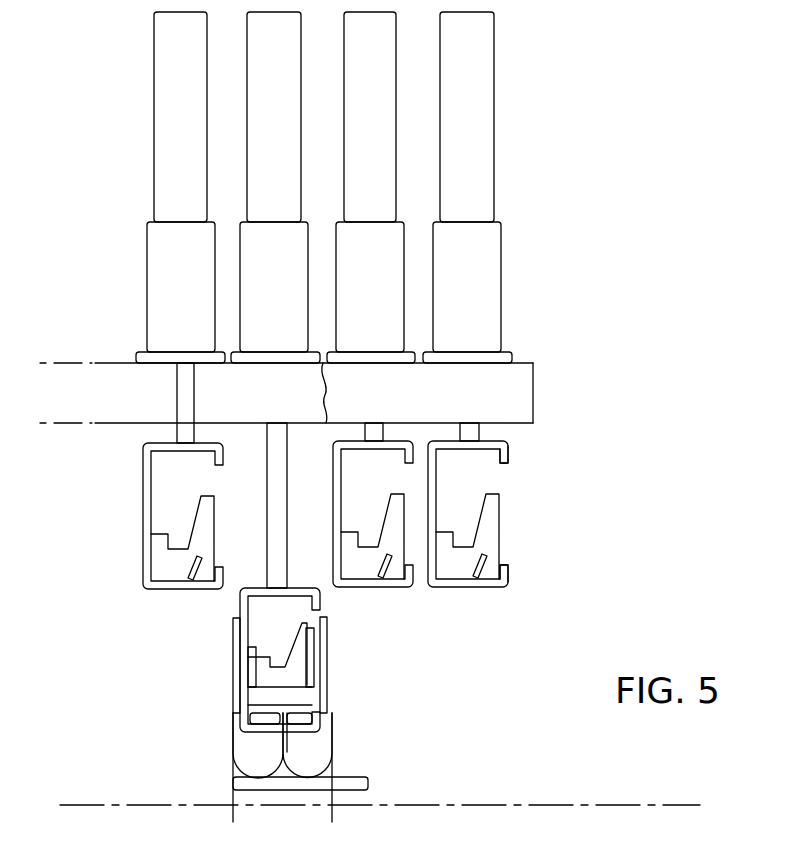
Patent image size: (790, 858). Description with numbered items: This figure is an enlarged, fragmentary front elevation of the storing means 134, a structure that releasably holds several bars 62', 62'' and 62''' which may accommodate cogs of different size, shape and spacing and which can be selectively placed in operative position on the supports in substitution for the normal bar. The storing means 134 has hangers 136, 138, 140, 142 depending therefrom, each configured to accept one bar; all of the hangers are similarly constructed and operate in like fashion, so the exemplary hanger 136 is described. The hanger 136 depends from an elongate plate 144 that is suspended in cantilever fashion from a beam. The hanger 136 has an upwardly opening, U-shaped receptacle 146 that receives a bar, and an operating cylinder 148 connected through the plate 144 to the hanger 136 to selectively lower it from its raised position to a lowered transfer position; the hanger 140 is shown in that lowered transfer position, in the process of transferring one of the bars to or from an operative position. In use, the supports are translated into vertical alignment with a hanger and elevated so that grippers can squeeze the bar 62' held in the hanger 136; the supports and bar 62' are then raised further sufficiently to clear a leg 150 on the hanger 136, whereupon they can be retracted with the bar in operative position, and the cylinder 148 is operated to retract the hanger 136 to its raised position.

The storing means 134 is at (580, 205).
The operating cylinder 148 is at (483, 146).
The elongate plate 144 is at (510, 385).
The hanger 142 is at (140, 537).
The hanger 138 is at (395, 576).
The U-shaped receptacle 146 is at (524, 527).
The hanger 140 is at (240, 606).
The hanger 136 is at (510, 452).
The leg 150 is at (513, 568).
The bar 62' is at (523, 530).
The bar 62'' is at (394, 579).
The bar 62''' is at (135, 528).